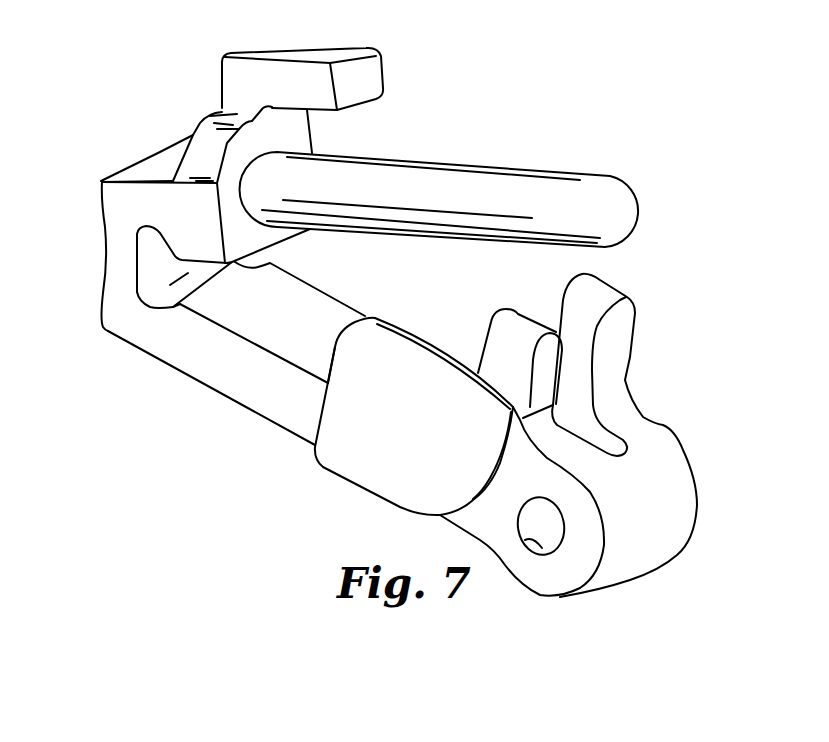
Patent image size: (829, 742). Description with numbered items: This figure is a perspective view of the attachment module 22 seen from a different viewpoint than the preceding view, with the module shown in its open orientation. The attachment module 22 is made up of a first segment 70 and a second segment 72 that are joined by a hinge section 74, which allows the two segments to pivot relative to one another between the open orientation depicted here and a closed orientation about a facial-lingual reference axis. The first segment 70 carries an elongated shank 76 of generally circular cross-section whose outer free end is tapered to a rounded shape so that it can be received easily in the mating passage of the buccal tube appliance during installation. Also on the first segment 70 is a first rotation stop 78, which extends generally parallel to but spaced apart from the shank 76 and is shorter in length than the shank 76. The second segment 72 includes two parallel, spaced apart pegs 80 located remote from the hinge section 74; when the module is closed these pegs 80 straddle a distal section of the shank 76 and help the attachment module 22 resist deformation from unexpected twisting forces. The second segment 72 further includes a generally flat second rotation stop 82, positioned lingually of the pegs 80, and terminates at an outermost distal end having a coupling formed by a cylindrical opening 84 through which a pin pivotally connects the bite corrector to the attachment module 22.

The attachment module 22 is at (587, 131).
The first segment 70 is at (191, 131).
The second segment 72 is at (220, 393).
The hinge section 74 is at (118, 260).
The shank 76 is at (460, 180).
The first rotation stop 78 is at (303, 53).
The pegs 80 is at (593, 293).
The second rotation stop 82 is at (364, 450).
The cylindrical opening 84 is at (537, 542).